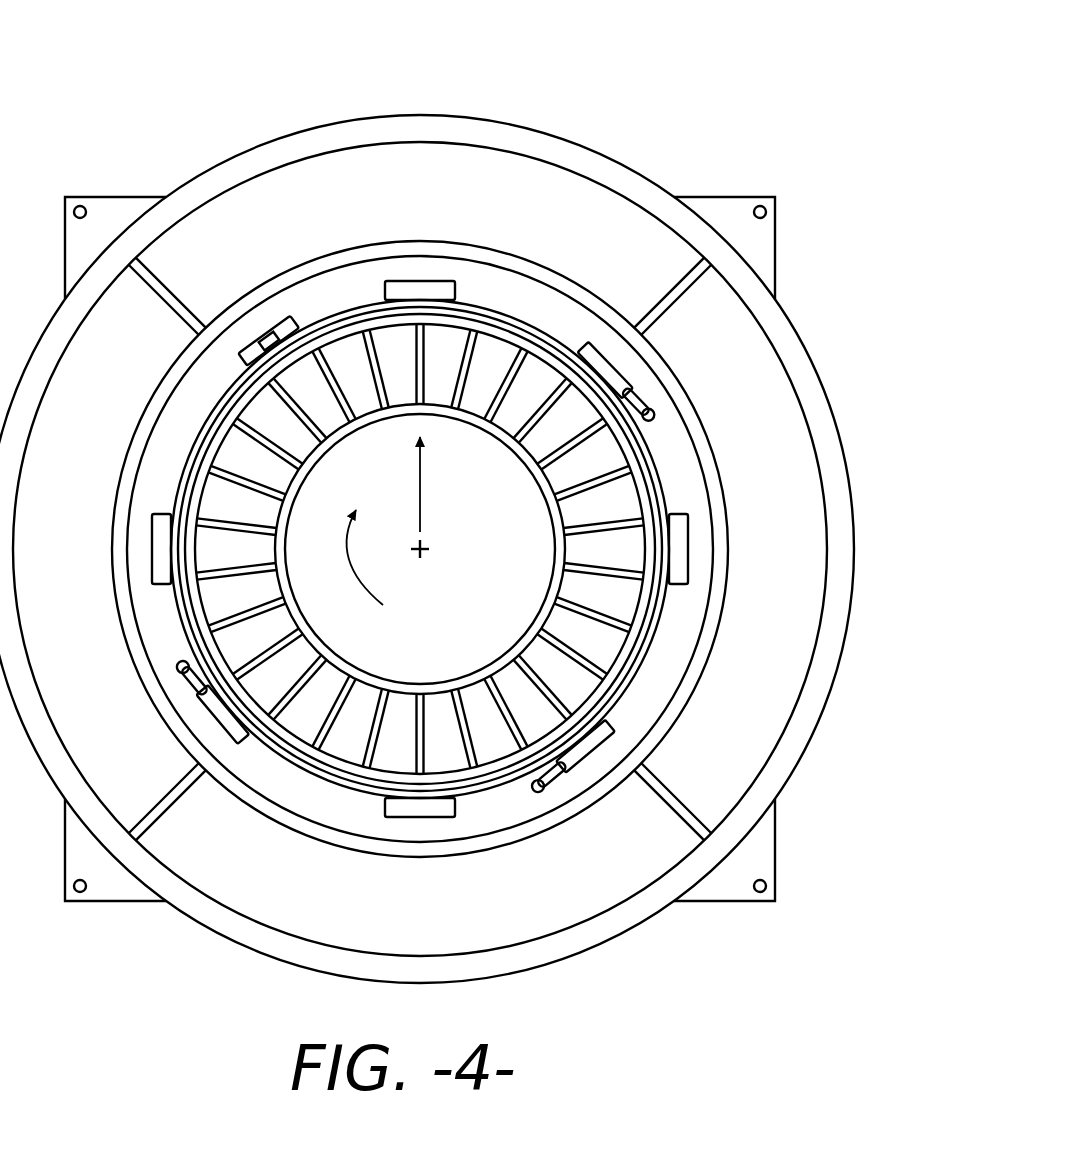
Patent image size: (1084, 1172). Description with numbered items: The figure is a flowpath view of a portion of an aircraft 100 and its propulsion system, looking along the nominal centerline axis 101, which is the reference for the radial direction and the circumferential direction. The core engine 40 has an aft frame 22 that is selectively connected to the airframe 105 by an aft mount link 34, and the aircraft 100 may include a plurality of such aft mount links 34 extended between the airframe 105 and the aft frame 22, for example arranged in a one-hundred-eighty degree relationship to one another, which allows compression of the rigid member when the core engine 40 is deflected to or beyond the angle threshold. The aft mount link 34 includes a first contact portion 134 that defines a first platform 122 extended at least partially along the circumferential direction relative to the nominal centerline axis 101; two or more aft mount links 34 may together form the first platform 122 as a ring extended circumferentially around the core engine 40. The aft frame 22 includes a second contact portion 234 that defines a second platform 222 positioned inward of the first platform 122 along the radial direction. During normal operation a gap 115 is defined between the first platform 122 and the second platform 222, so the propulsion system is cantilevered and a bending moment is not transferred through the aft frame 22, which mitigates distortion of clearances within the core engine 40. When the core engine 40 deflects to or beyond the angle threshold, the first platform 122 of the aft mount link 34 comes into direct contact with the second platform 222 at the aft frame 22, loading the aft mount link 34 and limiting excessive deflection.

The aircraft 100 is at (444, 499).
The airframe 105 is at (812, 395).
The aft mount link 34 is at (687, 305).
The core engine 40 is at (332, 292).
The first contact portion 134 is at (600, 305).
The aft frame 22 is at (573, 335).
The first platform 122 is at (742, 518).
The second platform 222 is at (690, 577).
The gap 115 is at (640, 348).
The second contact portion 234 is at (650, 399).
The nominal centerline axis 101 is at (430, 556).